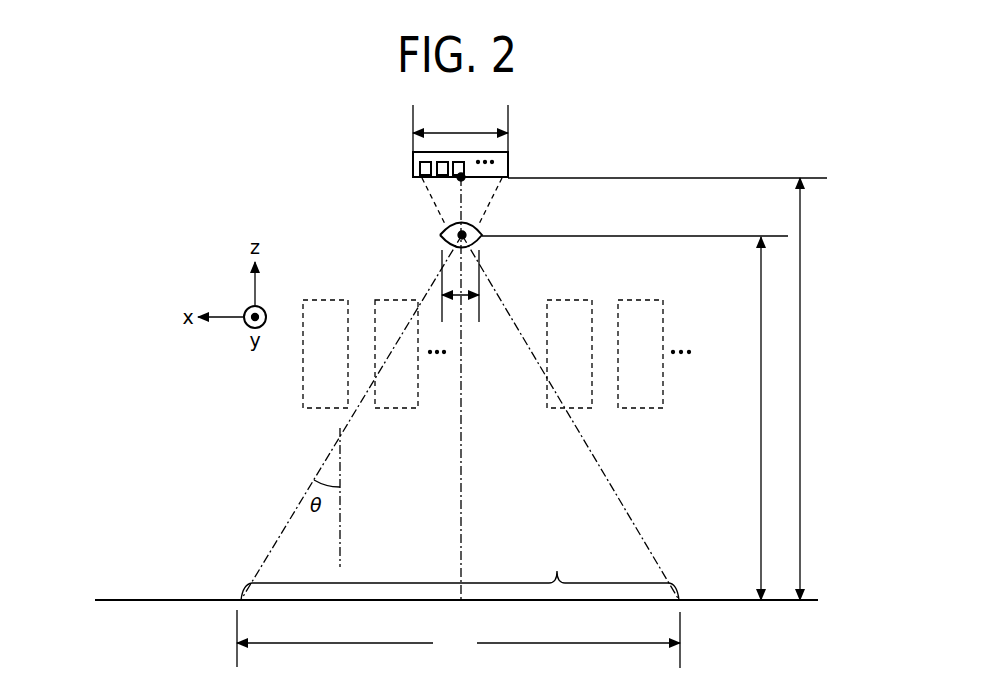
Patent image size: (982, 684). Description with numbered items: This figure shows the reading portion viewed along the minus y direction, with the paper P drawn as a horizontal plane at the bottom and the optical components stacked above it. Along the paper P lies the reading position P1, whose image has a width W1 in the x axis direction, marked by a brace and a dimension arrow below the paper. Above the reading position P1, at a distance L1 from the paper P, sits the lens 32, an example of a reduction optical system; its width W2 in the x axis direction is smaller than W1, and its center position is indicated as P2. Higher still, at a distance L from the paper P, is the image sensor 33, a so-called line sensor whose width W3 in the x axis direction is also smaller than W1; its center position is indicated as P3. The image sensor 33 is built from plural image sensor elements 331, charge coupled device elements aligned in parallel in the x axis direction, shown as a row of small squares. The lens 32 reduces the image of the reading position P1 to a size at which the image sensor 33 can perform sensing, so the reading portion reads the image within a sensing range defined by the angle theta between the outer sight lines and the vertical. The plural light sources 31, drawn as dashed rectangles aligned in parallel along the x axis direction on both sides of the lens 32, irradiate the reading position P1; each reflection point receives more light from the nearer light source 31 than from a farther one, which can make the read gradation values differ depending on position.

The light source 31 is at (645, 410).
The lens 32 is at (440, 236).
The image sensor 33 is at (413, 160).
The image sensor element 331 is at (457, 176).
The paper P is at (201, 603).
The reading position P1 is at (460, 571).
The eye position P2 is at (472, 242).
The display center position P3 is at (468, 181).
The width of image of reading position W1 is at (458, 639).
The width of lens W2 is at (466, 300).
The width of image sensor W3 is at (460, 128).
The distance from paper to image sensor L is at (789, 389).
The distance from paper to lens L1 is at (747, 418).